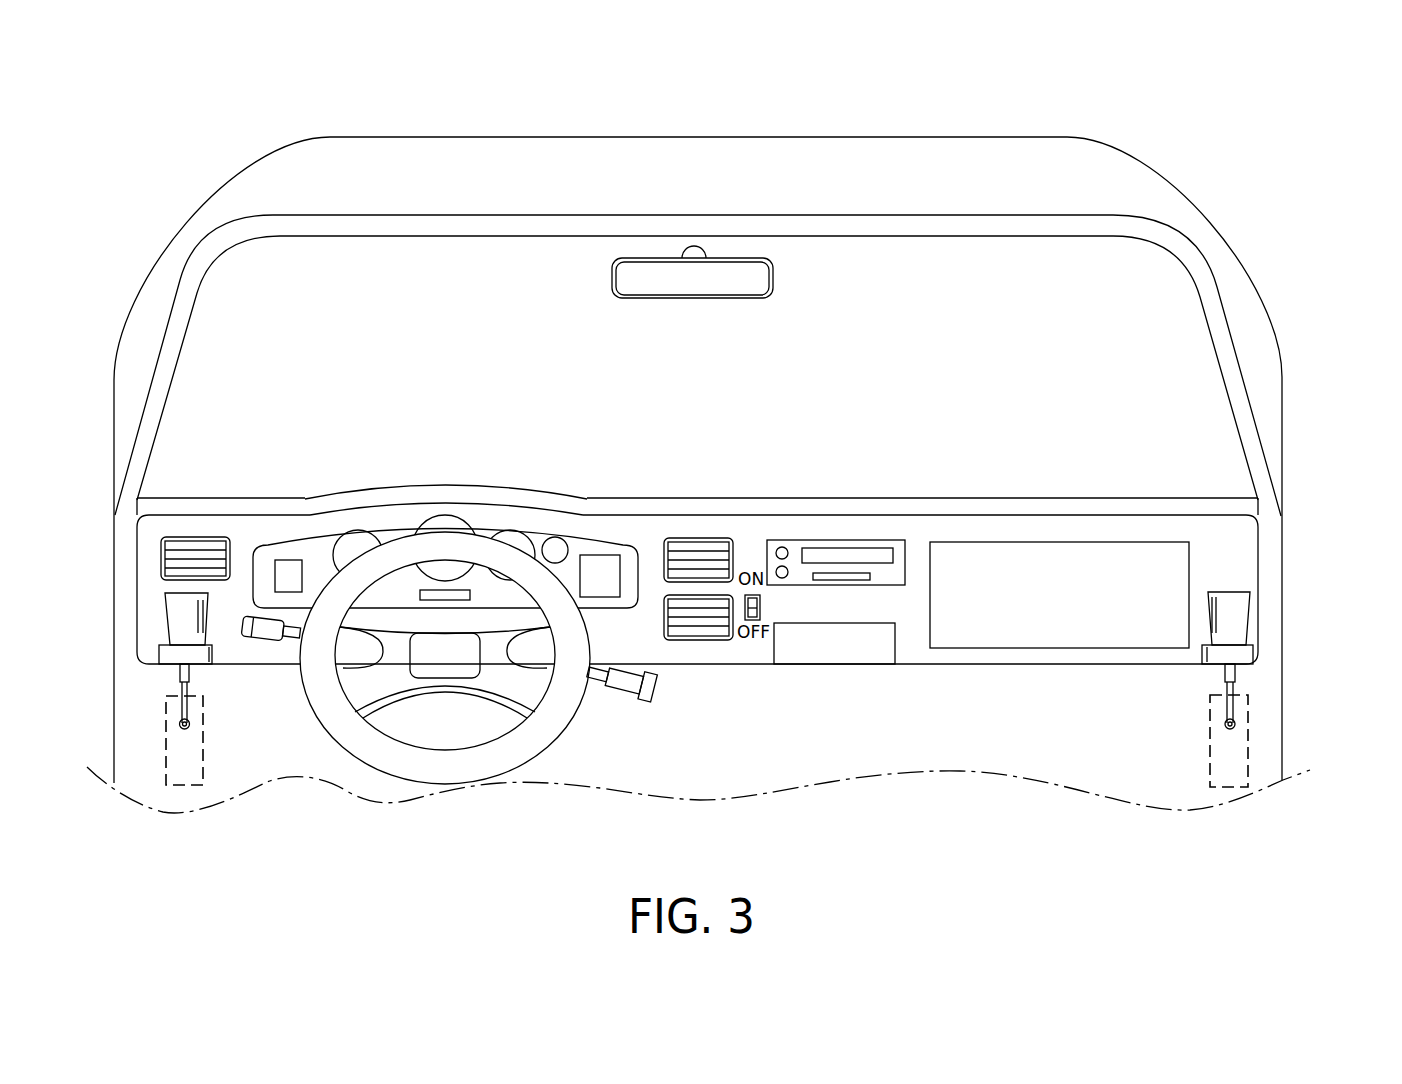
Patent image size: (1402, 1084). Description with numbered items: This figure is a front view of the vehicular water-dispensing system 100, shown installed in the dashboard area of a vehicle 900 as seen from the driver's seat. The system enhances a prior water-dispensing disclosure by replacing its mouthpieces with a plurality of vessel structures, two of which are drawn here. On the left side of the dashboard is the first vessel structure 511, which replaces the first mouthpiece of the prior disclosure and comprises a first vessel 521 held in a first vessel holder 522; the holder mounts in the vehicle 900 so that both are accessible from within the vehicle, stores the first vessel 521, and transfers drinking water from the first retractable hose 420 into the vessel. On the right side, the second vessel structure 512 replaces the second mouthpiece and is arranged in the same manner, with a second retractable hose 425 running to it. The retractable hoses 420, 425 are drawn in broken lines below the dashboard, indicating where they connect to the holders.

The vehicular water-dispensing system 100 is at (112, 142).
The vehicle 900 is at (1110, 535).
The first vessel structure 511 is at (137, 613).
The second vessel structure 512 is at (1260, 622).
The first vessel 521 is at (168, 621).
The first vessel holder 522 is at (172, 655).
The first retractable hose 420 is at (185, 705).
The second retractable hose 425 is at (1230, 710).